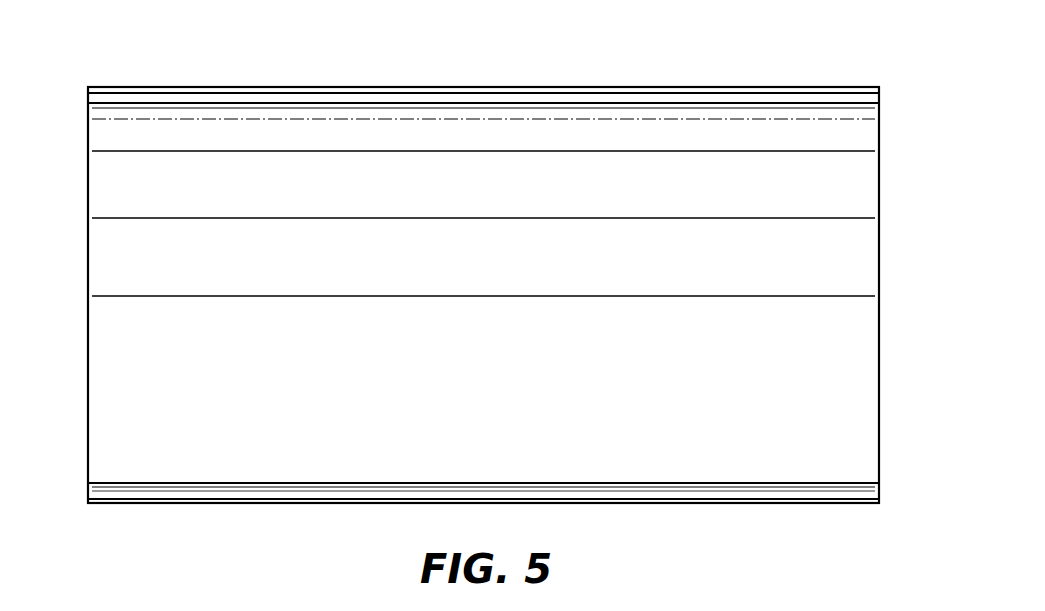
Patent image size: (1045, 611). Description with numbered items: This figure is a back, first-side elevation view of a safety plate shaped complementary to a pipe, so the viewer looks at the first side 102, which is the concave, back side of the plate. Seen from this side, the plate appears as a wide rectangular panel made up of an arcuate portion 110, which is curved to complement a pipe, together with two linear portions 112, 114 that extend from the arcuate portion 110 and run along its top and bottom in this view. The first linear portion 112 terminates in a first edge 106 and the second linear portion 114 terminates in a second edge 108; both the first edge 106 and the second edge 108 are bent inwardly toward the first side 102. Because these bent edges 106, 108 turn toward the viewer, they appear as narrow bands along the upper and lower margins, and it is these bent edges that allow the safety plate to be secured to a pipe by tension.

The arcuate portion 110 is at (487, 297).
The first side 102 is at (855, 372).
The first linear portion 112 is at (765, 98).
The first edge 106 is at (845, 108).
The second edge 108 is at (850, 482).
The second linear portion 114 is at (778, 492).